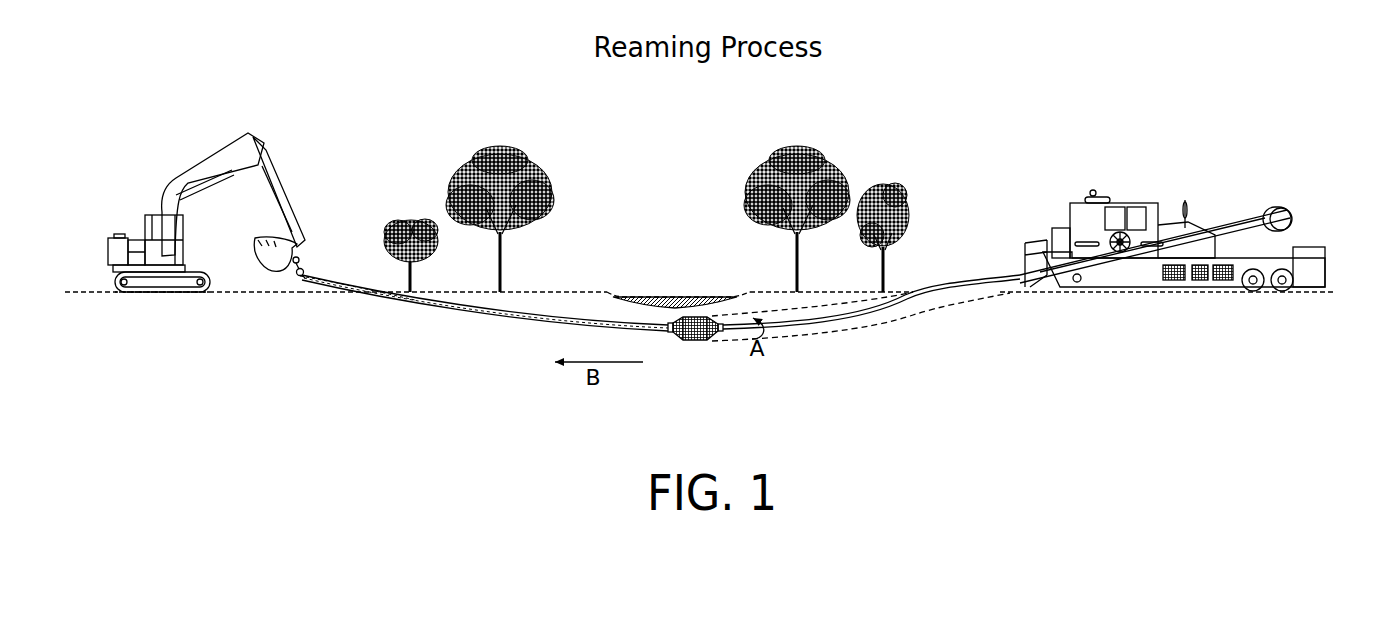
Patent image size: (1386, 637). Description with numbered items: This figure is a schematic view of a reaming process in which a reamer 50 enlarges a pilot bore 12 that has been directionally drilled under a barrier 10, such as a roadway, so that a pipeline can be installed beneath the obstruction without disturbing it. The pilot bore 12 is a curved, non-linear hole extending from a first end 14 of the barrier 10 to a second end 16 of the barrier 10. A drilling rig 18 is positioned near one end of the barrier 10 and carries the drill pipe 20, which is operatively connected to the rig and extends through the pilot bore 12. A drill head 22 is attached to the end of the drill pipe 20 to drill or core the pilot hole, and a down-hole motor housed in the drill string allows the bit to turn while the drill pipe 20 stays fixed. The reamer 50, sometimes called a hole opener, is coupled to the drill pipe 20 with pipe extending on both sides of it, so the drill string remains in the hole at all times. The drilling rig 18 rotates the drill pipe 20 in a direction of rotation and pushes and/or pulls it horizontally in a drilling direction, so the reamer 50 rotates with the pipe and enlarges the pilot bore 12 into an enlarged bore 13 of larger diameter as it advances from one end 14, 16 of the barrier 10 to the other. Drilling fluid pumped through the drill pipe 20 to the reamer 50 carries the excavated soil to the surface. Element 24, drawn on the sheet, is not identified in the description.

The barrier 10 is at (677, 297).
The pilot bore 12 is at (491, 323).
The enlarged bore 13 is at (856, 328).
The first end 14 is at (923, 289).
The second end 16 is at (367, 286).
The drilling rig 18 is at (1116, 191).
The drill pipe 20 is at (402, 308).
The drill head 22 is at (295, 285).
The excavator 24 is at (207, 147).
The reamer 50 is at (698, 342).